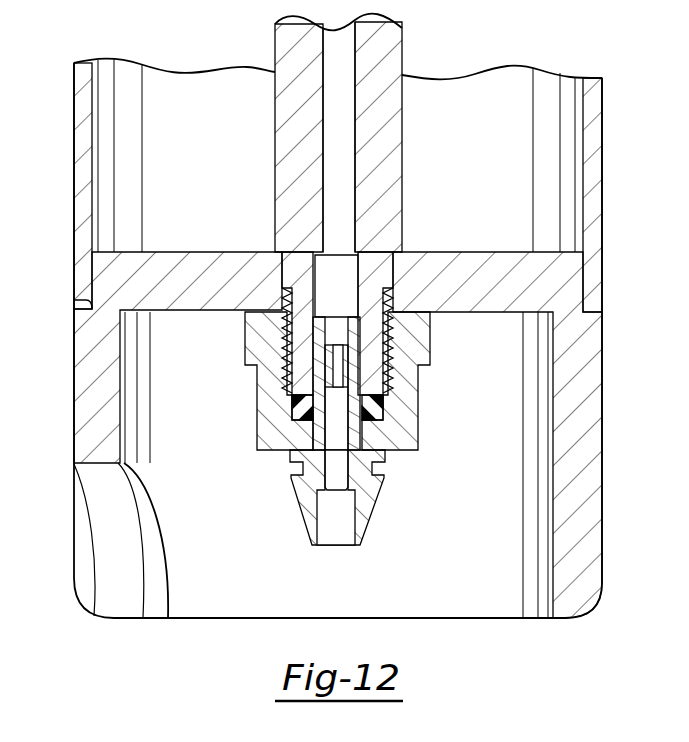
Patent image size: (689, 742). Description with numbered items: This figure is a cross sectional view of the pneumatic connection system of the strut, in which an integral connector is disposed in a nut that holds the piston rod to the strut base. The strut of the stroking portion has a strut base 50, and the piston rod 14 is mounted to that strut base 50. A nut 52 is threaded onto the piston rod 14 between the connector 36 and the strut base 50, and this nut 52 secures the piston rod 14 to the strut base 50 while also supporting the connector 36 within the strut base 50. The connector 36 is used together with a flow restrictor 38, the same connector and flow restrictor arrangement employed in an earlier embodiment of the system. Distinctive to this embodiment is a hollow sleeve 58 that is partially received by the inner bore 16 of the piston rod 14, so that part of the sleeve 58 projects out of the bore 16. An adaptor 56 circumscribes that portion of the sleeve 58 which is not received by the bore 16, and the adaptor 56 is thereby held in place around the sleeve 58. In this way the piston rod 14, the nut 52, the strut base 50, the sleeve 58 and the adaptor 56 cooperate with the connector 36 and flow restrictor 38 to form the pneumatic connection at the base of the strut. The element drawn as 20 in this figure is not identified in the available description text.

The piston rod 14 is at (402, 157).
The inner bore 16 is at (338, 126).
The needle 20 is at (333, 462).
The connector 36 is at (300, 525).
The flow restrictor 38 is at (340, 360).
The strut base 50 is at (486, 258).
The nut 52 is at (415, 440).
The adaptor 56 is at (373, 403).
The hollow sleeve 58 is at (320, 377).